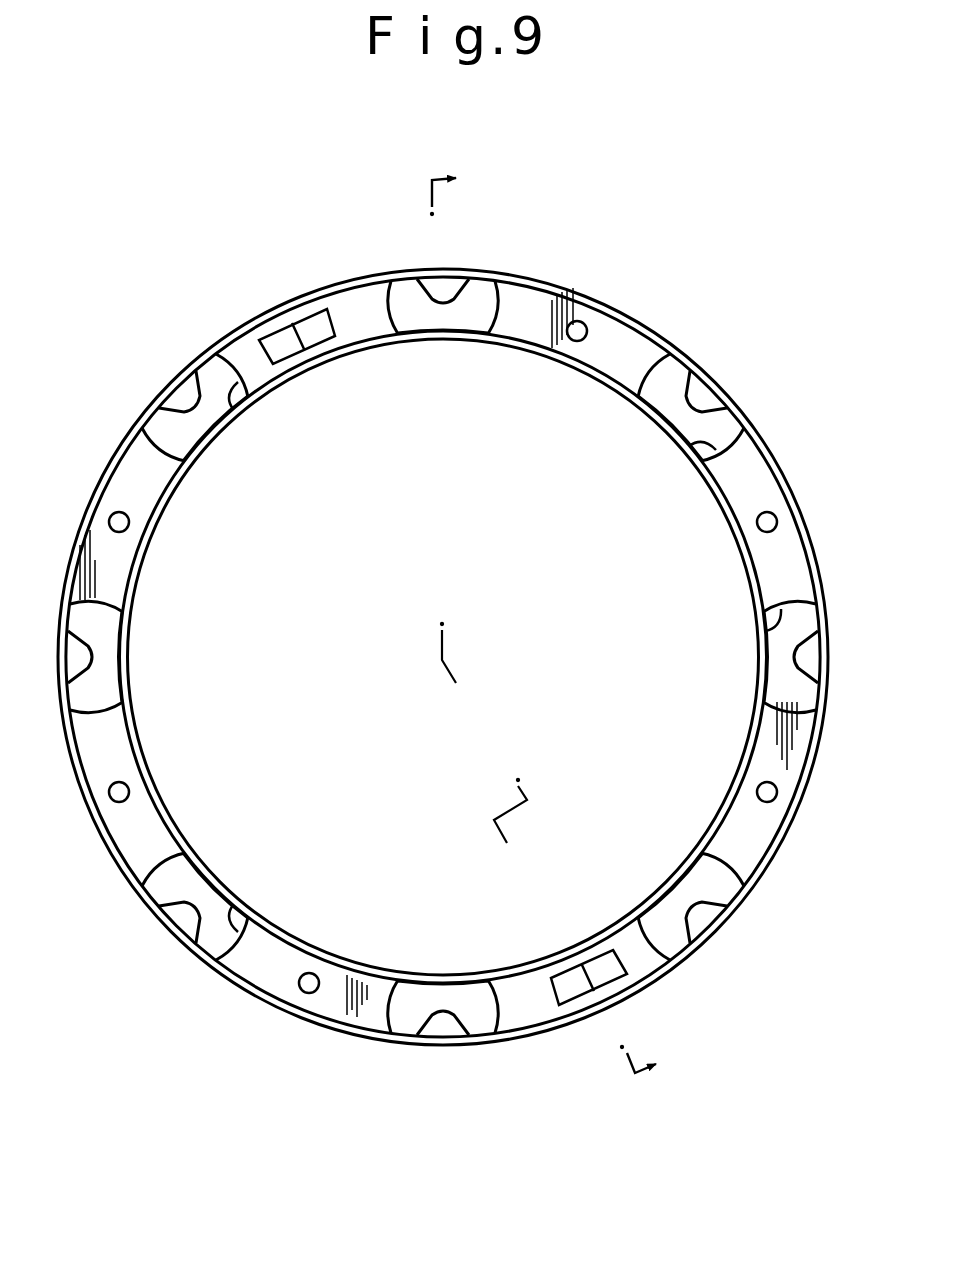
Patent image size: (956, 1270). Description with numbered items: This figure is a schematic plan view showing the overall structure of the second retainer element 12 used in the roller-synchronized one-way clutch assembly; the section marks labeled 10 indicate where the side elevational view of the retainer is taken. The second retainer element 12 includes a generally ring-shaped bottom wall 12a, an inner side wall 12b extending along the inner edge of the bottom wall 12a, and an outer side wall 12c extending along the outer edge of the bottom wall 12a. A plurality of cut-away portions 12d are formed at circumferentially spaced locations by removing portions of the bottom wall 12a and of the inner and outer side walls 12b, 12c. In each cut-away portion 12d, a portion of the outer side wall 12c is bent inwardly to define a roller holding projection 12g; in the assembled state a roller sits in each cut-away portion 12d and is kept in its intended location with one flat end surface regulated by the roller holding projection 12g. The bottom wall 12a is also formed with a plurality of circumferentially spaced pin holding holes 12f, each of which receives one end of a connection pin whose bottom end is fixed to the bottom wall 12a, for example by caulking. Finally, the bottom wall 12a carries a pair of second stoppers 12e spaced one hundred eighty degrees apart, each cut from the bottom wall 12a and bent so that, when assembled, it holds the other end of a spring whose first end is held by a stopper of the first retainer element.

The section line 10 is at (569, 620).
The second retainer element 12 is at (796, 352).
The bottom wall 12a is at (797, 556).
The inner side wall 12b is at (167, 507).
The outer side wall 12c is at (135, 435).
The cut-away portions 12d is at (230, 417).
The second stoppers 12e is at (270, 342).
The pin holding holes 12f is at (605, 313).
The roller holding projection 12g is at (178, 397).